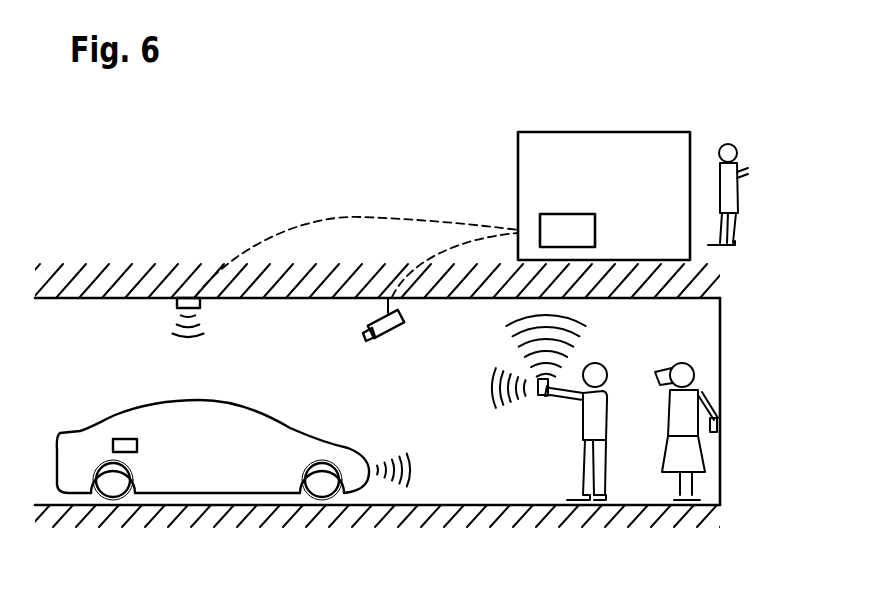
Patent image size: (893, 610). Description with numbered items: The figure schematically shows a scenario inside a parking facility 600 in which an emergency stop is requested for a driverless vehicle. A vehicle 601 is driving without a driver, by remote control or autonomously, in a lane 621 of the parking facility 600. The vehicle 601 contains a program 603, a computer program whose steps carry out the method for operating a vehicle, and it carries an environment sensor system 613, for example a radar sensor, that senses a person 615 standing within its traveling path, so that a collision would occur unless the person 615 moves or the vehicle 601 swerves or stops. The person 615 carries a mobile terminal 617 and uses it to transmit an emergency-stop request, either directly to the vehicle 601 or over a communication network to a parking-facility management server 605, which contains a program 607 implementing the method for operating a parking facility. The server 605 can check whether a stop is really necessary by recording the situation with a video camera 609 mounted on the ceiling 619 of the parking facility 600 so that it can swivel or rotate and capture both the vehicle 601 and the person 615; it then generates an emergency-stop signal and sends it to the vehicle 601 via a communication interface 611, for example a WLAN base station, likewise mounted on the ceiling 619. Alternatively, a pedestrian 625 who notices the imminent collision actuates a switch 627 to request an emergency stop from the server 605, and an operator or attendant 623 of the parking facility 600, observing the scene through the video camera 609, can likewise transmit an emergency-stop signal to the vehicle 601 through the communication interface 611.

The parking facility 600 is at (94, 228).
The vehicle 601 is at (80, 430).
The program 603 is at (117, 439).
The parking-facility management server 605 is at (518, 148).
The program 607 is at (560, 214).
The video camera 609 is at (400, 331).
The communication interface 611 is at (186, 298).
The environment sensor system 613 is at (368, 470).
The person 615 is at (607, 412).
The mobile terminal 617 is at (690, 250).
The ceiling 619 is at (720, 300).
The lane 621 is at (710, 500).
The operator or attendant 623 is at (742, 171).
The pedestrian 625 is at (700, 392).
The switch 627 is at (718, 428).